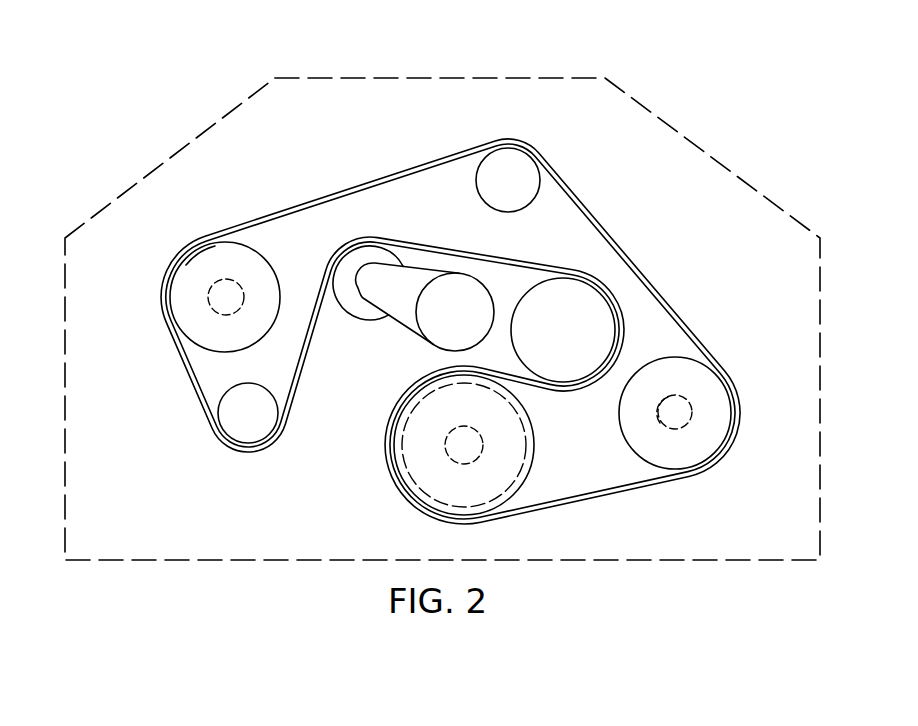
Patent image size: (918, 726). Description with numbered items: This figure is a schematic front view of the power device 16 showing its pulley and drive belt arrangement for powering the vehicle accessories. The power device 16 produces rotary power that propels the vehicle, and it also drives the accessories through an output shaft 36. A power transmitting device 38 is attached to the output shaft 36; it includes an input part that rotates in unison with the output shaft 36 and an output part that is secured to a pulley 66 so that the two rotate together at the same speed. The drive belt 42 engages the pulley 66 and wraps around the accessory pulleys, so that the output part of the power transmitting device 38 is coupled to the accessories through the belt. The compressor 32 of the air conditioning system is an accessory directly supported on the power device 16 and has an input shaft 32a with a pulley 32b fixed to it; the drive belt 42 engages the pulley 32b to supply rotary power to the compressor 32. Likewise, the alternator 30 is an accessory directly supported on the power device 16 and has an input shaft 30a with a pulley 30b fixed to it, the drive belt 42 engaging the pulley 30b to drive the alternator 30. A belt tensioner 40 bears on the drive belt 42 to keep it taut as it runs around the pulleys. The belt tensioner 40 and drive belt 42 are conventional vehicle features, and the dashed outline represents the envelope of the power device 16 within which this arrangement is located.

The power device 16 is at (527, 77).
The alternator 30 is at (718, 440).
The input shaft 30a is at (658, 423).
The pulley 30b is at (690, 392).
The compressor 32 is at (167, 308).
The input shaft 32a is at (233, 279).
The pulley 32b is at (197, 268).
The output shaft 36 is at (403, 396).
The power transmitting device 38 is at (523, 421).
The belt tensioner 40 is at (407, 330).
The drive belt 42 is at (620, 241).
The pulley 66 is at (528, 466).